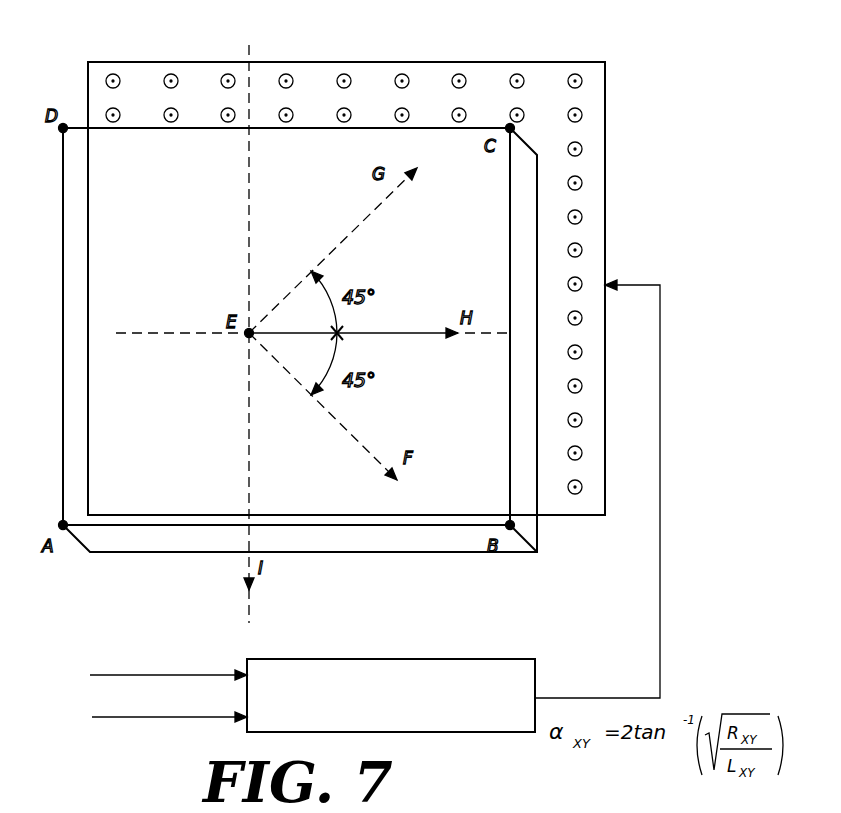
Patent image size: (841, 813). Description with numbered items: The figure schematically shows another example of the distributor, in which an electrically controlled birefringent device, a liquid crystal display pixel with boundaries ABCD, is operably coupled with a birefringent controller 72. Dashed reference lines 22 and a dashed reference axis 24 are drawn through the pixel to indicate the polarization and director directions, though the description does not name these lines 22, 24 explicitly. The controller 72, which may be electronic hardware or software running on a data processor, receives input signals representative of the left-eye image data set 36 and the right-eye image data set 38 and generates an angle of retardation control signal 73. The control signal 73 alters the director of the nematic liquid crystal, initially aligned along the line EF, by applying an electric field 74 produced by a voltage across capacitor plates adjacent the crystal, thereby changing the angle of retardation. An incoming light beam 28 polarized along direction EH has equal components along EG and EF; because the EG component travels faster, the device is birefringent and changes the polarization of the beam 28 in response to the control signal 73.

The sample plane 22 is at (116, 333).
The vertical reference axis 24 is at (249, 56).
The light beam 28 is at (418, 335).
The left-eye image data set 36 is at (147, 670).
The right-eye image data set 38 is at (147, 712).
The birefringent controller 72 is at (423, 659).
The angle of retardation control signal 73 is at (610, 700).
The electric field 74 is at (487, 78).